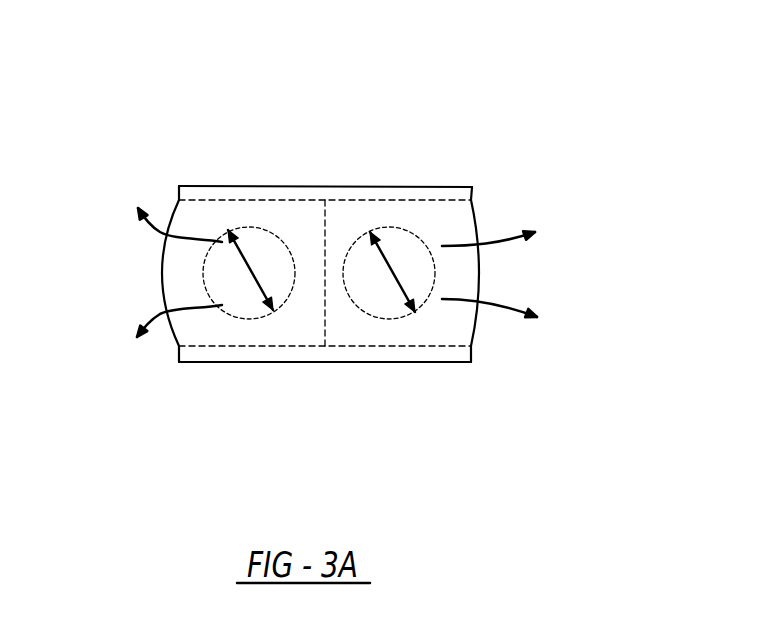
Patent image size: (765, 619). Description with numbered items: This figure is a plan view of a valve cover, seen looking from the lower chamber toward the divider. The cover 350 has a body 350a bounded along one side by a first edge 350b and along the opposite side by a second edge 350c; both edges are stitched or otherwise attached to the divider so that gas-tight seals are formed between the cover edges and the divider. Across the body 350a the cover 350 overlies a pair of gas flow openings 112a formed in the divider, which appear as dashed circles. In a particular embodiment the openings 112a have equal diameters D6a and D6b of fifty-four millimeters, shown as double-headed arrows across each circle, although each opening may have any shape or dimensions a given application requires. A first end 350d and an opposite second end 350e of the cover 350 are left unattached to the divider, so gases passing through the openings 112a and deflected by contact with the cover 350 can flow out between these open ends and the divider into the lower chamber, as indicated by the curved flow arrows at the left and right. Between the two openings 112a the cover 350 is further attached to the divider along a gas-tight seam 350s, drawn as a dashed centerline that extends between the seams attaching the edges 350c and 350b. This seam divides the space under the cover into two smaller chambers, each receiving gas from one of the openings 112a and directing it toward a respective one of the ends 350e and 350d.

The cover 350 is at (349, 282).
The body 350a is at (403, 215).
The first edge 350b is at (288, 185).
The second edge 350c is at (272, 361).
The first end 350d is at (173, 208).
The second end 350e is at (478, 222).
The gas-tight seam 350s is at (325, 308).
The gas flow openings 112a is at (250, 225).
The diameter of first opening D6a is at (253, 270).
The diameter of second opening D6b is at (402, 285).